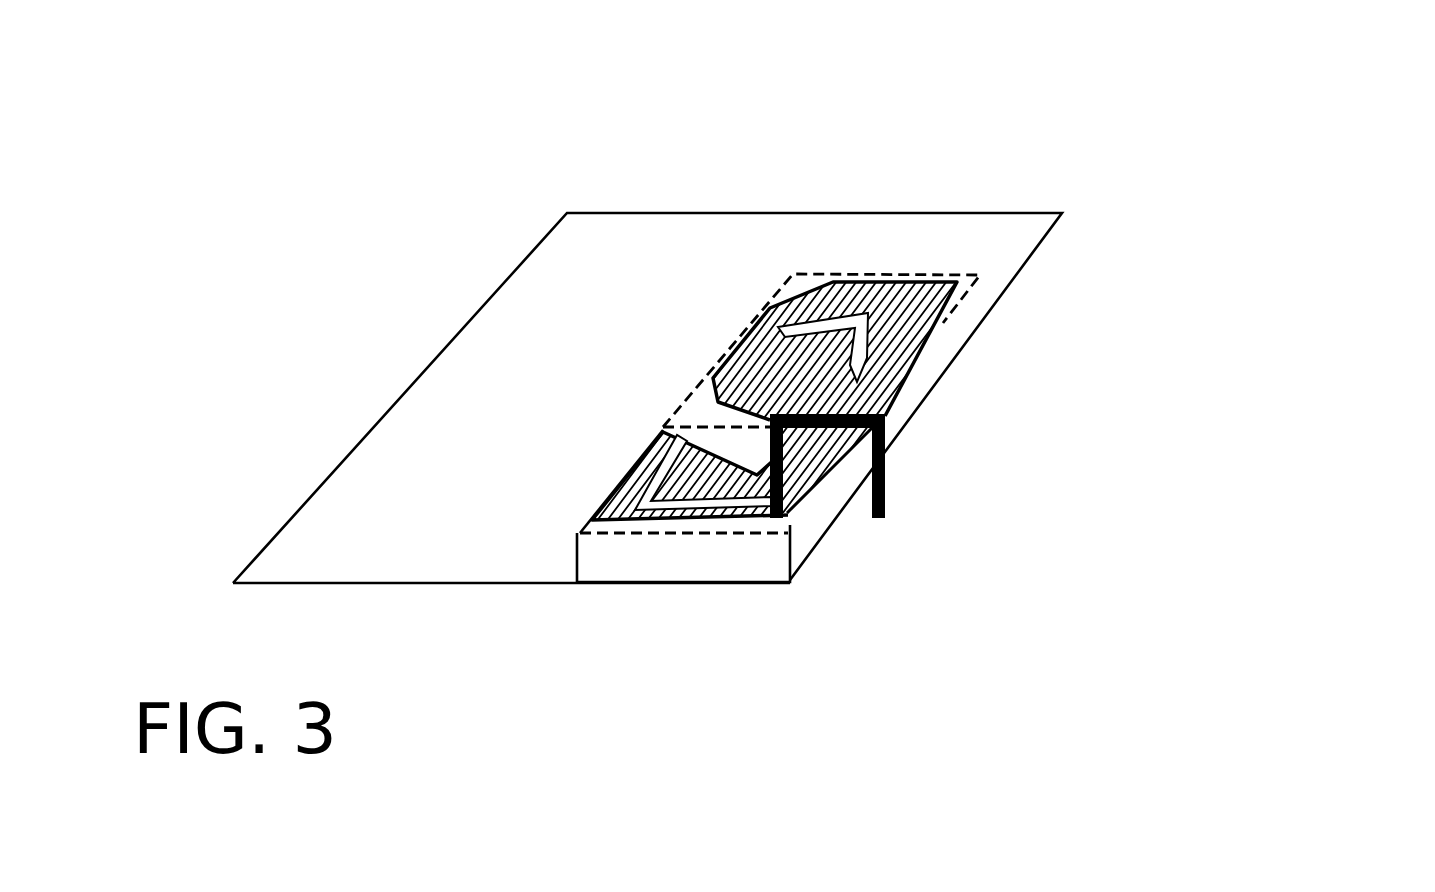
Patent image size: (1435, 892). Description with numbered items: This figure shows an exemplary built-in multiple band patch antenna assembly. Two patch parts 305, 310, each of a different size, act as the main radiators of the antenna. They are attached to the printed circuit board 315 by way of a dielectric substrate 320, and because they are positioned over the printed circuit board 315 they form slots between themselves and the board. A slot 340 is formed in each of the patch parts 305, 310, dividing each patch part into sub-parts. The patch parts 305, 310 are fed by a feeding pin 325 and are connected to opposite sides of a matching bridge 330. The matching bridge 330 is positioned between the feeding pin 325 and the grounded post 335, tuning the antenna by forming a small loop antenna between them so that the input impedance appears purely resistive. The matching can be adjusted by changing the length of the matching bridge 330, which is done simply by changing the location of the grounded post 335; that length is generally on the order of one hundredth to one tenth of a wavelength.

The patch part 305 is at (935, 324).
The patch part 310 is at (822, 520).
The printed circuit board 315 is at (595, 247).
The dielectric substrate 320 is at (955, 383).
The feeding pin 325 is at (770, 418).
The matching bridge 330 is at (840, 395).
The grounded post 335 is at (910, 498).
The slot 340 is at (757, 375).